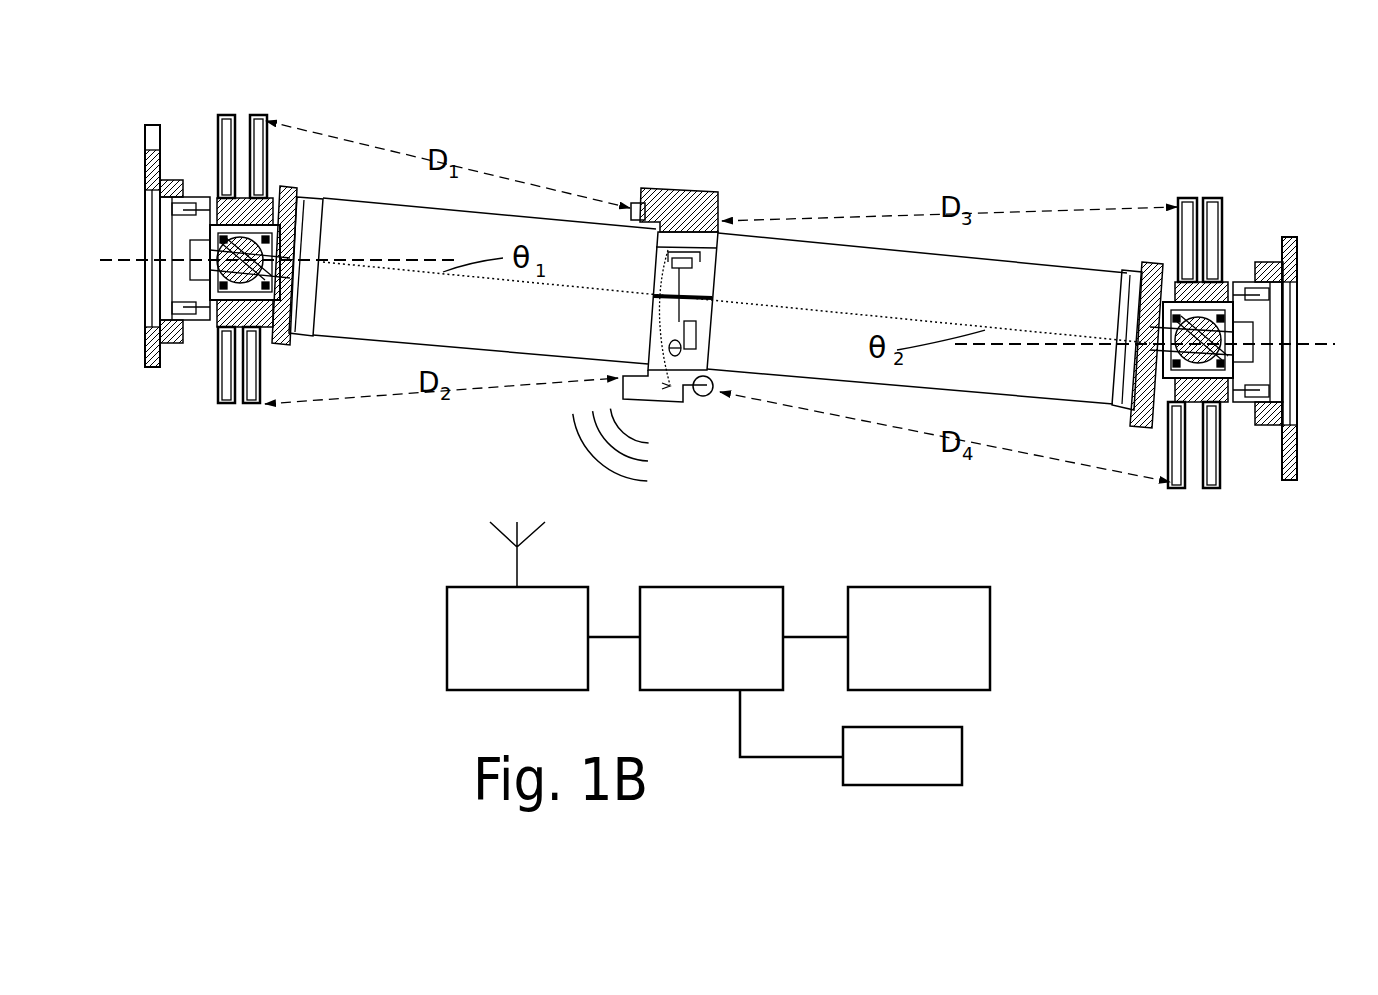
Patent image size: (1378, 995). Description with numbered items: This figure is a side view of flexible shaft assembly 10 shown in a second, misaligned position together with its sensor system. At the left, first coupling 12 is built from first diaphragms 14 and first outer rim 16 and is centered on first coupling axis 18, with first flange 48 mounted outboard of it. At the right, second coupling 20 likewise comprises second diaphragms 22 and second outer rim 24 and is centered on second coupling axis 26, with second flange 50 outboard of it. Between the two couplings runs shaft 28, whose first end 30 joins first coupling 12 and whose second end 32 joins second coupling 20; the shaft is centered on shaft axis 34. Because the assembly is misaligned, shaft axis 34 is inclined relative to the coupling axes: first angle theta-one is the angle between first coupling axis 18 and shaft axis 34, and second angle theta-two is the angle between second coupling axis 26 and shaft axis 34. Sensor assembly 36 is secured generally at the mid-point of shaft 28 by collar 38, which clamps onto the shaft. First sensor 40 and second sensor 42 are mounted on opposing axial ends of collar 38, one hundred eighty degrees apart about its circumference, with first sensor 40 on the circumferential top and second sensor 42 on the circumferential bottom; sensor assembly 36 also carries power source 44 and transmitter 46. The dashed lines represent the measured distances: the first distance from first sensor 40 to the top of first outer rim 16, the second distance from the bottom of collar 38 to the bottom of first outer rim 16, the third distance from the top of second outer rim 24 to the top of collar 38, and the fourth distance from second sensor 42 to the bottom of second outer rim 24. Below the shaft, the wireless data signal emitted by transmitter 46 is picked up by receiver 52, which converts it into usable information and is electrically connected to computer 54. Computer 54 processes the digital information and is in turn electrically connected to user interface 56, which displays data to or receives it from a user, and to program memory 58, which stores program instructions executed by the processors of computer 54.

The flexible shaft assembly 10 is at (1010, 128).
The first coupling 12 is at (254, 111).
The first diaphragms 14 is at (217, 368).
The first outer rim 16 is at (268, 119).
The first coupling axis 18 is at (118, 258).
The second coupling 20 is at (1214, 194).
The second diaphragms 22 is at (1172, 428).
The second outer rim 24 is at (1188, 197).
The second coupling axis 26 is at (1330, 346).
The shaft 28 is at (982, 256).
The first end 30 is at (300, 192).
The second end 32 is at (1130, 268).
The shaft axis 34 is at (803, 308).
The sensor assembly 36 is at (683, 186).
The collar 38 is at (710, 190).
The first sensor 40 is at (633, 201).
The second sensor 42 is at (708, 395).
The power source 44 is at (700, 336).
The transmitter 46 is at (685, 390).
The first flange 48 is at (151, 124).
The second flange 50 is at (1289, 237).
The receiver 52 is at (446, 612).
The computer 54 is at (722, 585).
The user interface 56 is at (928, 585).
The program memory 58 is at (963, 757).